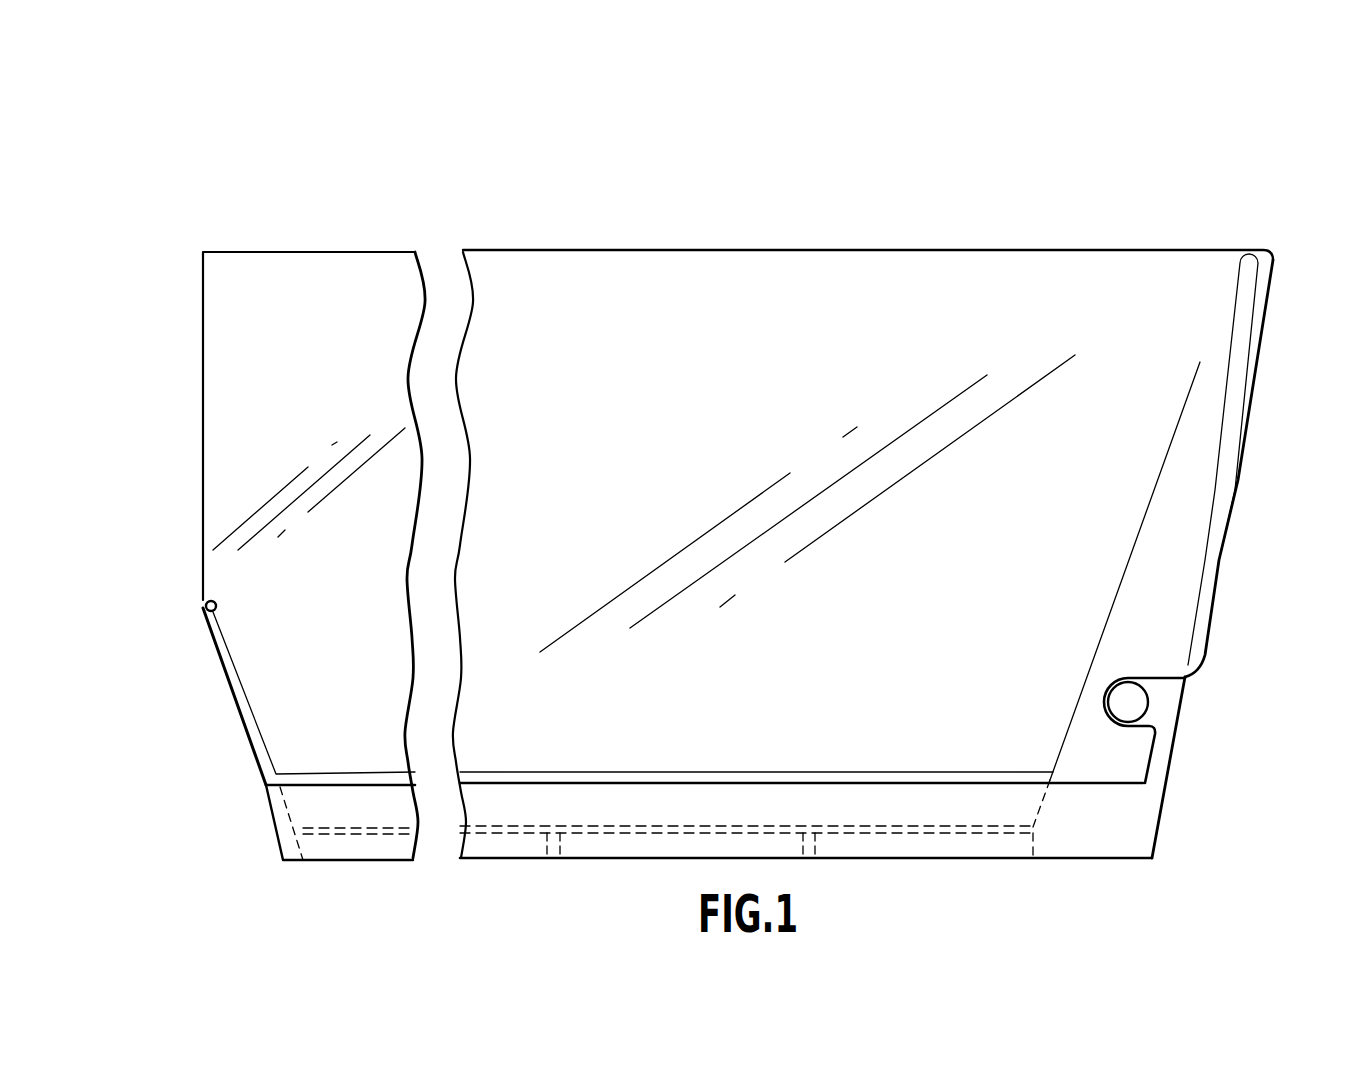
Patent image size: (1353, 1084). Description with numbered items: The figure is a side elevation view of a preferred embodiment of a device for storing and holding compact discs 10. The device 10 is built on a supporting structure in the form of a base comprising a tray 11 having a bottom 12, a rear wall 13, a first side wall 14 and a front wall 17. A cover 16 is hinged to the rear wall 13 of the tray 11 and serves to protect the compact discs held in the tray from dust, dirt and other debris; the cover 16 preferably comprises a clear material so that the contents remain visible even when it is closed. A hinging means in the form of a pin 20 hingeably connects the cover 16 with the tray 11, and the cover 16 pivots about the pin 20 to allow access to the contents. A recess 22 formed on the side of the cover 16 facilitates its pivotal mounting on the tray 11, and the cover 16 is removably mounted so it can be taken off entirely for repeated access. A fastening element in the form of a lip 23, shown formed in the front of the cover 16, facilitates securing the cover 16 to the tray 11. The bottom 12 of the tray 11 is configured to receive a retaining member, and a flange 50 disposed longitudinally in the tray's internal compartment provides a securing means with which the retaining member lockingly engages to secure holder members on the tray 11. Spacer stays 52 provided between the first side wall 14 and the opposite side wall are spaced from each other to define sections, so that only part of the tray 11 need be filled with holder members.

The device for storing and holding compact discs 10 is at (996, 206).
The tray 11 is at (1194, 698).
The bottom 12 is at (1105, 860).
The rear wall 13 is at (1200, 362).
The first side wall 14 is at (1163, 723).
The cover 16 is at (870, 272).
The front wall 17 is at (242, 735).
The pin 20 is at (1127, 690).
The recess 22 is at (1105, 697).
The lip 23 is at (216, 606).
The flange 50 is at (950, 827).
The spacer stay 52 is at (545, 835).